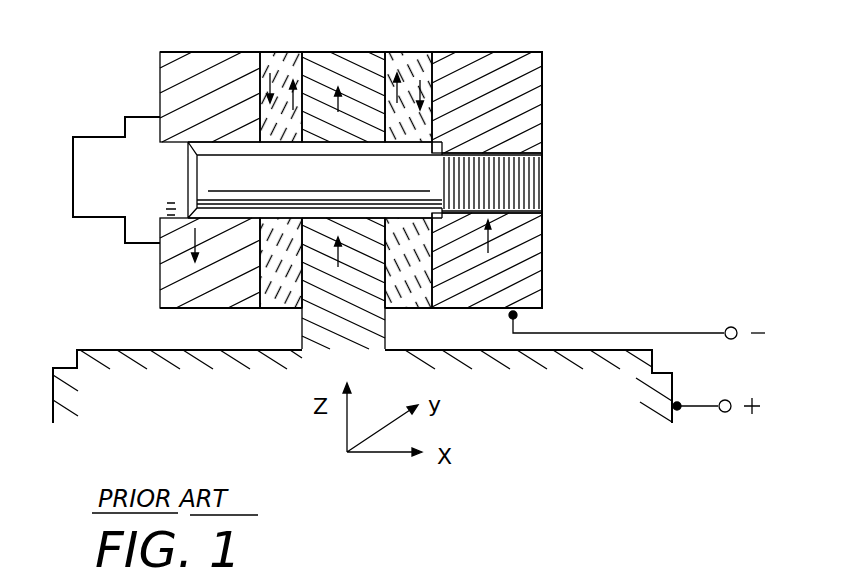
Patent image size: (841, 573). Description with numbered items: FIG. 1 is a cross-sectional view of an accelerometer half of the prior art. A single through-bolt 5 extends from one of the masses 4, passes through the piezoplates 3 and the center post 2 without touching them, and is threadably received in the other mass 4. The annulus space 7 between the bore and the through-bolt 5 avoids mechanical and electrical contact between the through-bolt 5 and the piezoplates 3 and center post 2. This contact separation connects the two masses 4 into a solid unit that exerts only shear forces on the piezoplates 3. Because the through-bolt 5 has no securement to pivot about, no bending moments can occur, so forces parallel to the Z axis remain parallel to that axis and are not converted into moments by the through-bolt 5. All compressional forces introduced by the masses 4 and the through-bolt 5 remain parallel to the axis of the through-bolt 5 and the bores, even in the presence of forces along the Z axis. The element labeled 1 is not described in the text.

The base 1 is at (108, 373).
The center post 2 is at (368, 67).
The piezoplates 3 is at (277, 67).
The masses 4 is at (217, 73).
The through-bolt 5 is at (540, 183).
The annulus space 7 is at (233, 148).